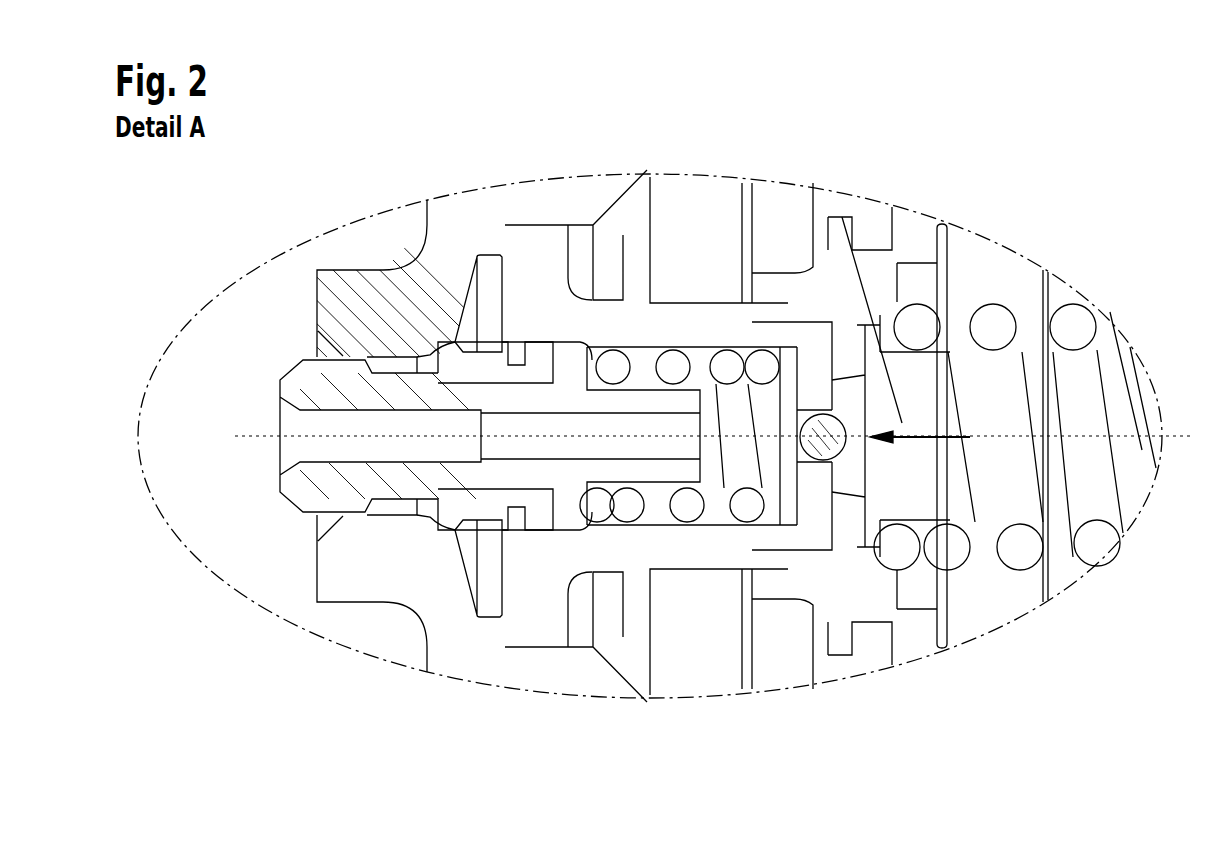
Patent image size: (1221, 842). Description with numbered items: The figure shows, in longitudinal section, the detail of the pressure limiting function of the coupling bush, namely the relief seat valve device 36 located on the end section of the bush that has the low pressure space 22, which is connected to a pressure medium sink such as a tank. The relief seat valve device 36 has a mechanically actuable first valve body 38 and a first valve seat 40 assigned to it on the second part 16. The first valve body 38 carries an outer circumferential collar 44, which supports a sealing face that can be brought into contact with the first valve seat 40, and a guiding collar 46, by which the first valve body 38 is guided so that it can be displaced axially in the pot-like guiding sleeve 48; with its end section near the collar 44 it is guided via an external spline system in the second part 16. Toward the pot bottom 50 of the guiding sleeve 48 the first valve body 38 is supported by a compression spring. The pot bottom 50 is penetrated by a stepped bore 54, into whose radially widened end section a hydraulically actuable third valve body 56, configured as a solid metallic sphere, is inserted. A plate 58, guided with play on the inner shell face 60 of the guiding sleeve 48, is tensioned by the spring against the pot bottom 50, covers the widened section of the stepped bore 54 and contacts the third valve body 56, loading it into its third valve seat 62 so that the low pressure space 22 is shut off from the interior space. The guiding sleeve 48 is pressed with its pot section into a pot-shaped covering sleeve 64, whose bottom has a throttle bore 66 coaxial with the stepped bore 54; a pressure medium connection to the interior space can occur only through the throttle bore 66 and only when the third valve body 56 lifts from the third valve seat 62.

The second part 16 is at (370, 288).
The low pressure space 22 is at (287, 420).
The relief seat valve device 36 is at (626, 152).
The first valve body 38 is at (385, 518).
The first valve seat 40 is at (408, 355).
The collar 44 is at (422, 508).
The guiding collar 46 is at (556, 600).
The guiding sleeve 48 is at (687, 540).
The pot bottom 50 is at (808, 470).
The stepped bore 54 is at (893, 428).
The third valve body 56 is at (822, 463).
The plate 58 is at (787, 367).
The inner shell face 60 is at (722, 520).
The third valve seat 62 is at (812, 398).
The covering sleeve 64 is at (792, 526).
The throttle bore 66 is at (893, 437).